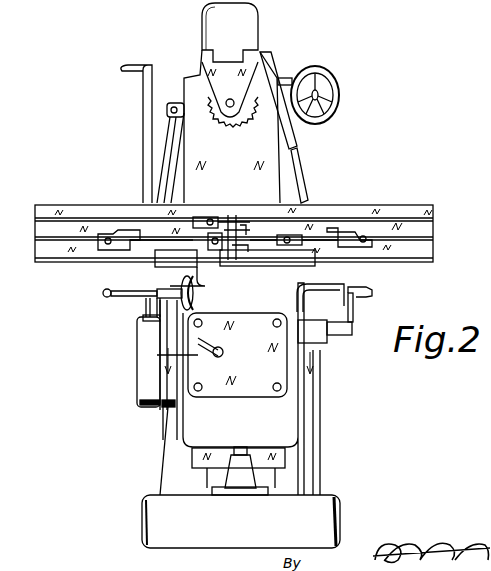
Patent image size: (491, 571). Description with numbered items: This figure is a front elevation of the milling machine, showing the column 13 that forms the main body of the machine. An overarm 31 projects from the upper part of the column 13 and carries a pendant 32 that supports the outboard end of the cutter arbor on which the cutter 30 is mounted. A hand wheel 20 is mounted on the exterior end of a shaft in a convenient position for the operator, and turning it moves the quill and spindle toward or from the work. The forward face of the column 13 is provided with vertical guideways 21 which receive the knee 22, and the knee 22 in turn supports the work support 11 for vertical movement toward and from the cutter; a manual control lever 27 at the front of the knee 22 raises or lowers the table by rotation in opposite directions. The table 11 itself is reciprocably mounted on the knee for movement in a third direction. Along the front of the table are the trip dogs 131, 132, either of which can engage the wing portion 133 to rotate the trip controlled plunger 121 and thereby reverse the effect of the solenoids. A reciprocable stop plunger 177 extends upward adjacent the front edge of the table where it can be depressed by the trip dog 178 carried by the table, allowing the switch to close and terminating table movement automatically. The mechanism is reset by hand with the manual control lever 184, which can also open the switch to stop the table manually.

The work support 11 is at (405, 203).
The column 13 is at (168, 470).
The hand wheel 20 is at (339, 85).
The vertical guideways 21 is at (273, 180).
The knee 22 is at (182, 425).
The manual control lever 27 is at (108, 300).
The cutter 30 is at (242, 128).
The overarm 31 is at (248, 35).
The pendant 32 is at (255, 58).
The trip controlled plunger 121 is at (247, 256).
The trip dog 131 is at (125, 232).
The trip dog 132 is at (330, 227).
The wing portion 133 is at (237, 235).
The stop plunger 177 is at (187, 258).
The trip dog 178 is at (207, 267).
The manual control lever 184 is at (198, 342).